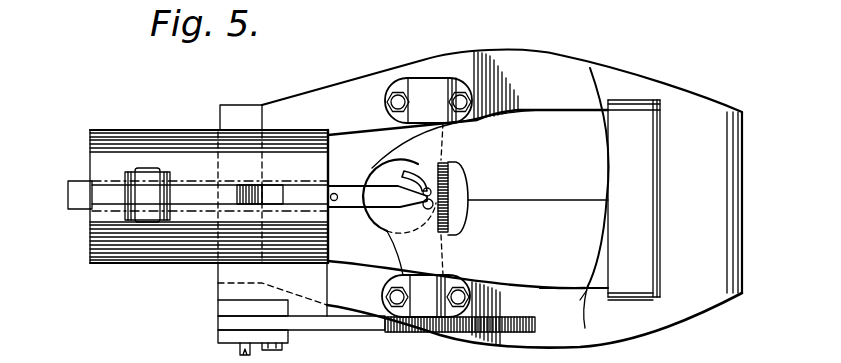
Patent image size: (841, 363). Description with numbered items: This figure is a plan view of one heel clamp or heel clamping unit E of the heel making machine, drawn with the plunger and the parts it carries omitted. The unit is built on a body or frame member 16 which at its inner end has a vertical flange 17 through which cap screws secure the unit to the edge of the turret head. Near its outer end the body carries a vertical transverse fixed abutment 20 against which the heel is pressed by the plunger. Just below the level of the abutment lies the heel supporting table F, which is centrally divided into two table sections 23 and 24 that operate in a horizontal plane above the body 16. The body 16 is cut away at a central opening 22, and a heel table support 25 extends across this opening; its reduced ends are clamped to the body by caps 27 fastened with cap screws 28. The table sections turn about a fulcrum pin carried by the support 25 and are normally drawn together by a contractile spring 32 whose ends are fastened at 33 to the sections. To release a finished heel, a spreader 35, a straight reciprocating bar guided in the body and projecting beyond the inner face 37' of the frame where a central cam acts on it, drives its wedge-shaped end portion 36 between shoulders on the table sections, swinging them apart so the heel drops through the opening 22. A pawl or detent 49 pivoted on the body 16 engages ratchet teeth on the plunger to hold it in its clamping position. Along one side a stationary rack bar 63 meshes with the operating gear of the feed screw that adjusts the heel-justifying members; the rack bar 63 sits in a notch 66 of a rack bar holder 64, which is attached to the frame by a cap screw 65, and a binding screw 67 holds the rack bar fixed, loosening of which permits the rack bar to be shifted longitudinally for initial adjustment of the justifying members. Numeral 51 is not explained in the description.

The body or frame member 16 is at (618, 331).
The vertical flange 17 is at (219, 118).
The fixed abutment 20 is at (634, 200).
The central opening 22 is at (456, 288).
The table section 23 is at (567, 198).
The table section 24 is at (558, 272).
The heel table support 25 is at (468, 139).
The cap 27 is at (420, 88).
The cap screw 28 is at (386, 106).
The contractile spring 32 is at (466, 197).
The spring fastening point 33 is at (446, 160).
The spreader 35 is at (80, 204).
The wedge-shaped end portion 36 is at (382, 196).
The inner face of unit frame 37' is at (190, 196).
The pawl or detent 49 is at (200, 192).
The piston 51 is at (108, 190).
The rack bar 63 is at (384, 333).
The rack bar holder 64 is at (218, 307).
The cap screw 65 is at (288, 349).
The notch 66 is at (218, 329).
The binding screw 67 is at (238, 352).
The heel clamp or heel clamping unit E is at (712, 106).
The heel supporting table F is at (538, 216).